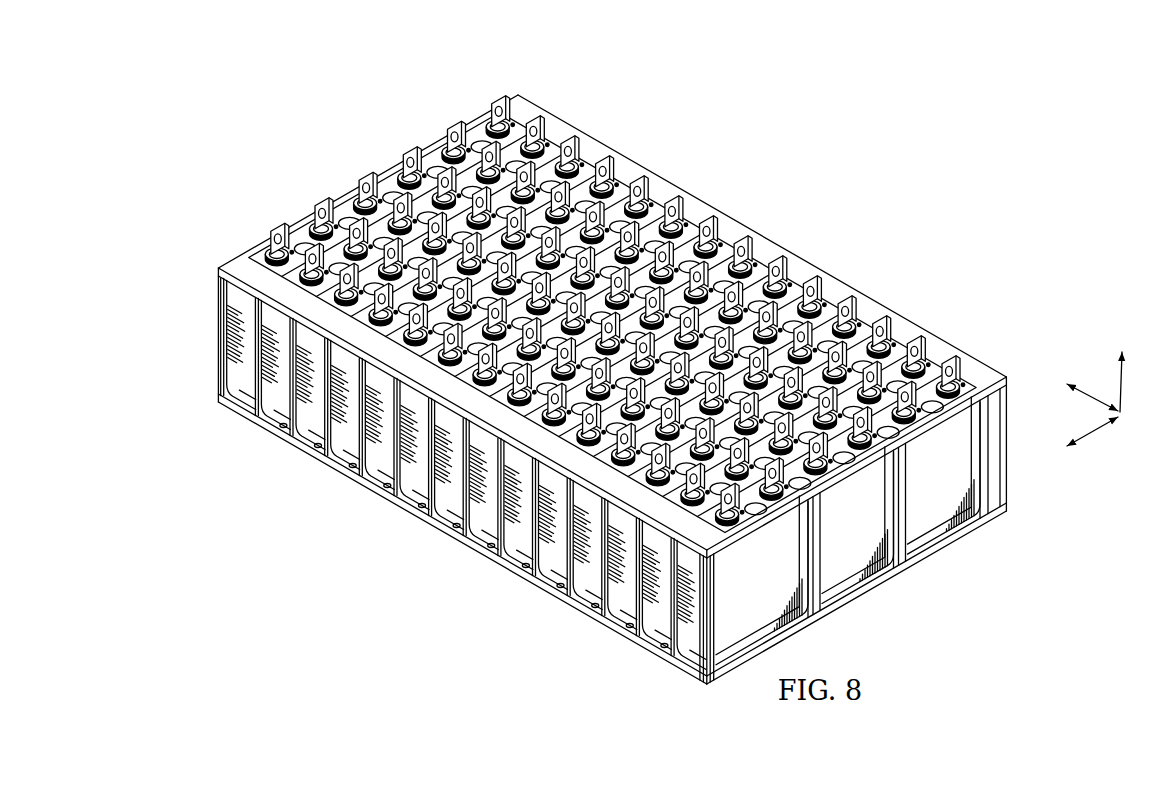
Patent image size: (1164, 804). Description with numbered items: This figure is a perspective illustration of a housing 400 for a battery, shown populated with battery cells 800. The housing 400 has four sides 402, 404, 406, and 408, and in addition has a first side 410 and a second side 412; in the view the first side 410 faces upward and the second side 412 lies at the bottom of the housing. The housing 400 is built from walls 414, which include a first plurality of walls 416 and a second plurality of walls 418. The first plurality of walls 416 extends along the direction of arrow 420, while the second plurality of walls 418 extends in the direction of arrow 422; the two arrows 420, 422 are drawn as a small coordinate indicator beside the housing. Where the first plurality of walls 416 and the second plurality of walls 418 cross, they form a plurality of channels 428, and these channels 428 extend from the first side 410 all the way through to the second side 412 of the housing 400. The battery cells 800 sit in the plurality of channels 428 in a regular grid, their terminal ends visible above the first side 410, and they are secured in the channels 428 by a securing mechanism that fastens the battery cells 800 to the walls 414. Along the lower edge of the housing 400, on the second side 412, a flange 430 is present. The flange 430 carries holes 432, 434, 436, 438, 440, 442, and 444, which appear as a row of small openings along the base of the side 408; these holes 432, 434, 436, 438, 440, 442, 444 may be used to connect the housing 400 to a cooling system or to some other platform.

The housing 400 is at (327, 122).
The side 402 is at (298, 221).
The side 404 is at (757, 236).
The side 406 is at (835, 587).
The side 408 is at (250, 370).
The first side 410 is at (672, 193).
The second side 412 is at (358, 483).
The walls 414 is at (429, 166).
The first plurality of walls 416 is at (905, 432).
The second plurality of walls 418 is at (852, 330).
The arrow 420 is at (1093, 393).
The arrow 422 is at (1095, 430).
The plurality of channels 428 is at (592, 160).
The flange 430 is at (690, 664).
The hole 432 is at (279, 428).
The hole 434 is at (348, 467).
The hole 436 is at (418, 508).
The hole 438 is at (453, 529).
The hole 440 is at (522, 569).
The hole 442 is at (591, 609).
The hole 444 is at (660, 649).
The battery cells 800 is at (907, 353).